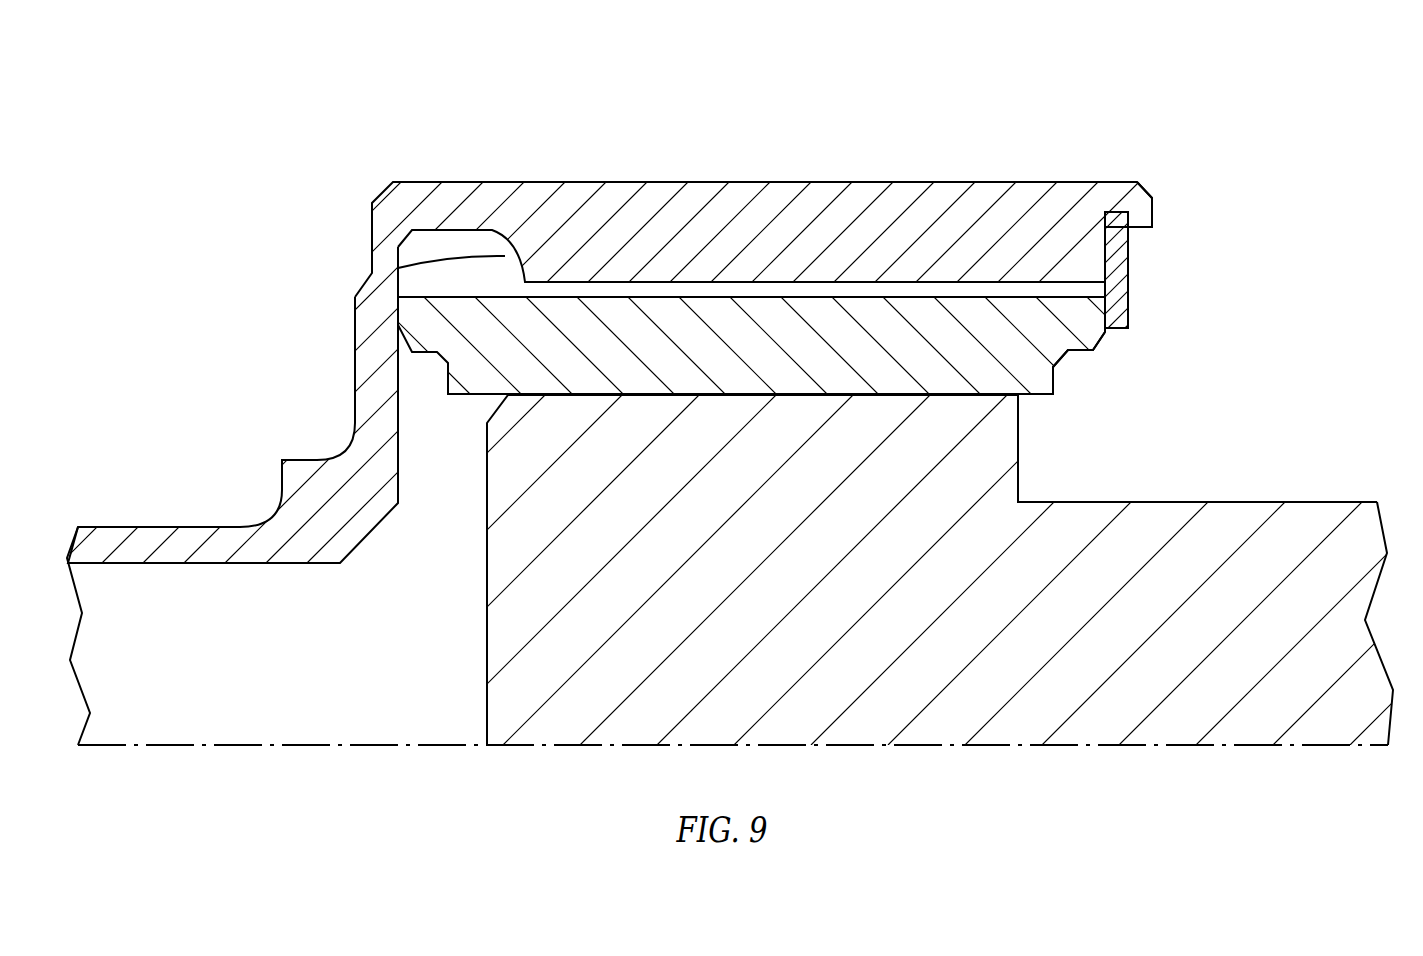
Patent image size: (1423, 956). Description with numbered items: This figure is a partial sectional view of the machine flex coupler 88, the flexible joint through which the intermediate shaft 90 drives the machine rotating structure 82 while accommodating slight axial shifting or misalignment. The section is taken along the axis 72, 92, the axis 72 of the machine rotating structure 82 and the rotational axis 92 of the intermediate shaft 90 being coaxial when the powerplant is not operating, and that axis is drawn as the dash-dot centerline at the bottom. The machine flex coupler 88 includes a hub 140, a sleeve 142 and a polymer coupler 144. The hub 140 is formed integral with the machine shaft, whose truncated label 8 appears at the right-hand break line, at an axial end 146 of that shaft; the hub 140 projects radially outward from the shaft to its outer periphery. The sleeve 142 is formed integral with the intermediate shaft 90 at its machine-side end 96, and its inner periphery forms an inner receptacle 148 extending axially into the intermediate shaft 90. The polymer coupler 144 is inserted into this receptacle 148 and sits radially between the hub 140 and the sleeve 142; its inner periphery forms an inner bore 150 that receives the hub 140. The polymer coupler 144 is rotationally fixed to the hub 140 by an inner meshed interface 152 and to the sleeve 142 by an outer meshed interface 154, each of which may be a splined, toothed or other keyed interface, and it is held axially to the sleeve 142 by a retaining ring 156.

The shaft 8 is at (1380, 592).
The axis 72 is at (172, 747).
The machine rotating structure 82 is at (1296, 482).
The machine flex coupler 88 is at (1164, 141).
The intermediate shaft 90 is at (151, 512).
The rotational axis 92 is at (185, 777).
The machine-side end 96 is at (1152, 213).
The hub 140 is at (470, 644).
The sleeve 142 is at (893, 166).
The polymer coupler 144 is at (1068, 379).
The axial end 146 is at (487, 582).
The inner receptacle 148 is at (478, 254).
The inner bore 150 is at (460, 463).
The inner meshed interface 152 is at (844, 384).
The outer meshed interface 154 is at (743, 284).
The retaining ring 156 is at (1128, 265).